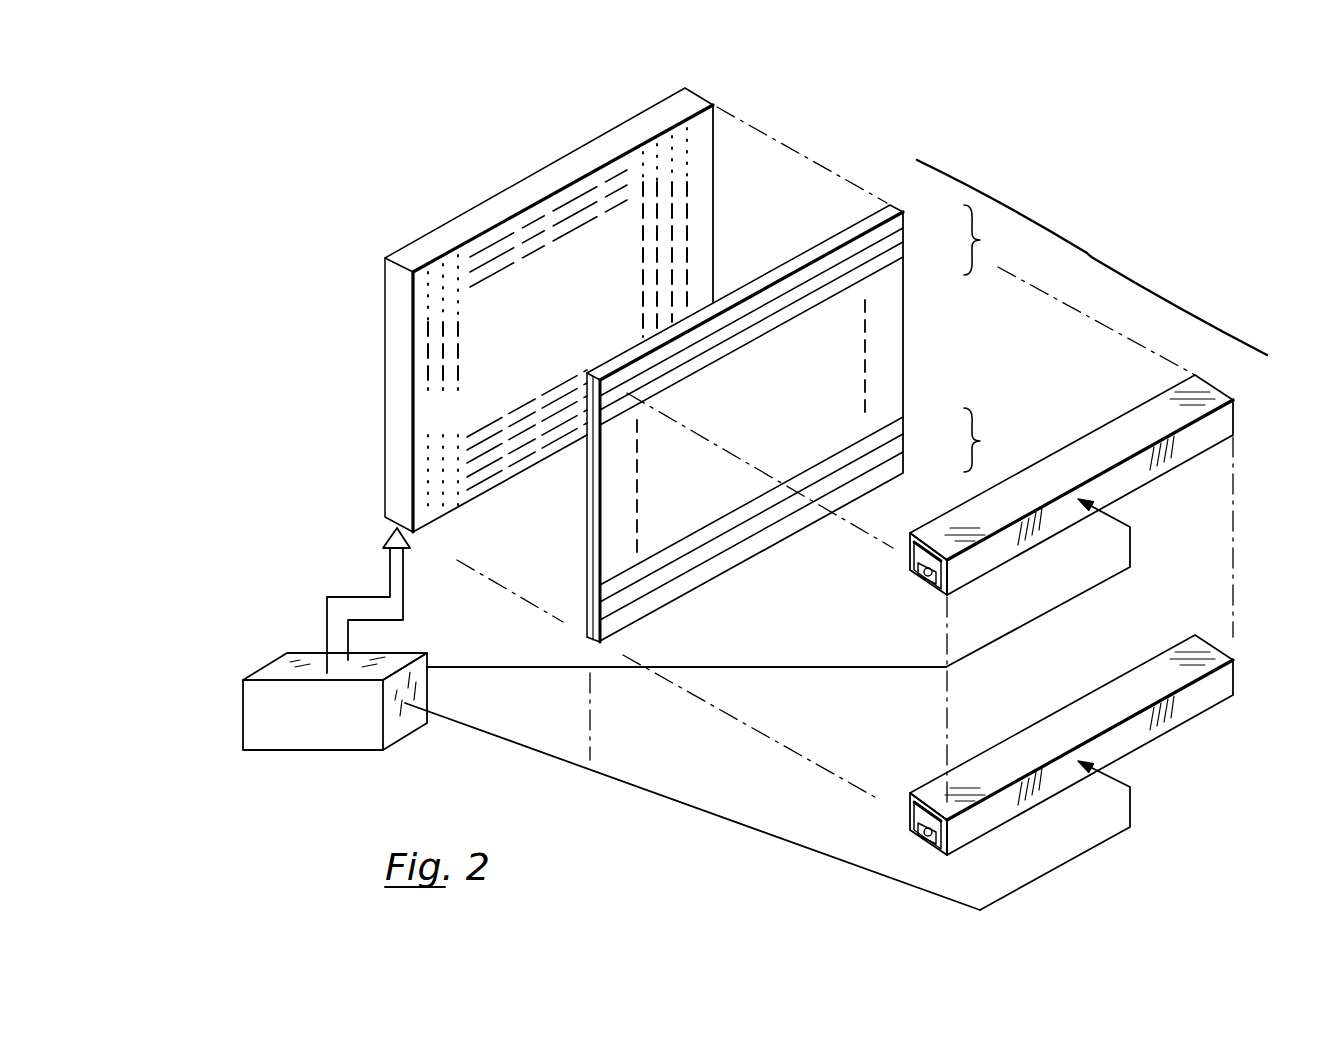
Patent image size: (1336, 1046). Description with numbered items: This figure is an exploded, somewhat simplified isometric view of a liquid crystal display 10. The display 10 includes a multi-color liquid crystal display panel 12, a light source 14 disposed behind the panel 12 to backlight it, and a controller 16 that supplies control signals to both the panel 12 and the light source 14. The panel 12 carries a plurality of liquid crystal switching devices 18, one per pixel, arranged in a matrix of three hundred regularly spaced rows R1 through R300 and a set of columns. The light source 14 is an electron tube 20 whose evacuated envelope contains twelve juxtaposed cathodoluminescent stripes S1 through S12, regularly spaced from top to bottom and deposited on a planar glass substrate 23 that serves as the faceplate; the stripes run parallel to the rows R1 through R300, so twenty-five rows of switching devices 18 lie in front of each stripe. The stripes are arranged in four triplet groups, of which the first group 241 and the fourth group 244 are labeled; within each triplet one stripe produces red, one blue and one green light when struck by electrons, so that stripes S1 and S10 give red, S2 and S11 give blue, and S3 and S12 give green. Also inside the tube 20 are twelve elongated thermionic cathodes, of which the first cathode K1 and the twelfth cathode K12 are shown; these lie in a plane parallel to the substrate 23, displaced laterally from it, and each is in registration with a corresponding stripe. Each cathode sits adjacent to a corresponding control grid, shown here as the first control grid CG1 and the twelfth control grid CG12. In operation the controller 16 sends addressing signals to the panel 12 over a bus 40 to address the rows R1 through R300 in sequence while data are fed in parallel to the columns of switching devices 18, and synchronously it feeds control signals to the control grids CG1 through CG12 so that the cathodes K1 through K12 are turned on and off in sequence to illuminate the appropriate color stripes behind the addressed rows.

The liquid crystal display 10 is at (490, 170).
The multi-color liquid crystal display panel 12 is at (655, 106).
The light source 14 is at (1092, 257).
The controller 16 is at (273, 660).
The liquid crystal switching devices 18 is at (440, 268).
The electron tube 20 is at (1041, 176).
The glass substrate 23 is at (833, 233).
The bus 40 is at (400, 594).
The first row R1 is at (577, 196).
The three-hundredth row R300 is at (542, 452).
The cathodoluminescent stripe S1 is at (905, 222).
The cathodoluminescent stripe S2 is at (905, 241).
The cathodoluminescent stripe S3 is at (905, 258).
The cathodoluminescent stripe S10 is at (905, 419).
The cathodoluminescent stripe S11 is at (905, 435).
The cathodoluminescent stripe S12 is at (905, 453).
The first stripe group 241 is at (992, 240).
The fourth stripe group 244 is at (990, 440).
The control grid CG1 is at (1233, 417).
The control grid CG12 is at (1233, 677).
The thermionic cathode K1 is at (928, 573).
The thermionic cathode K12 is at (925, 832).